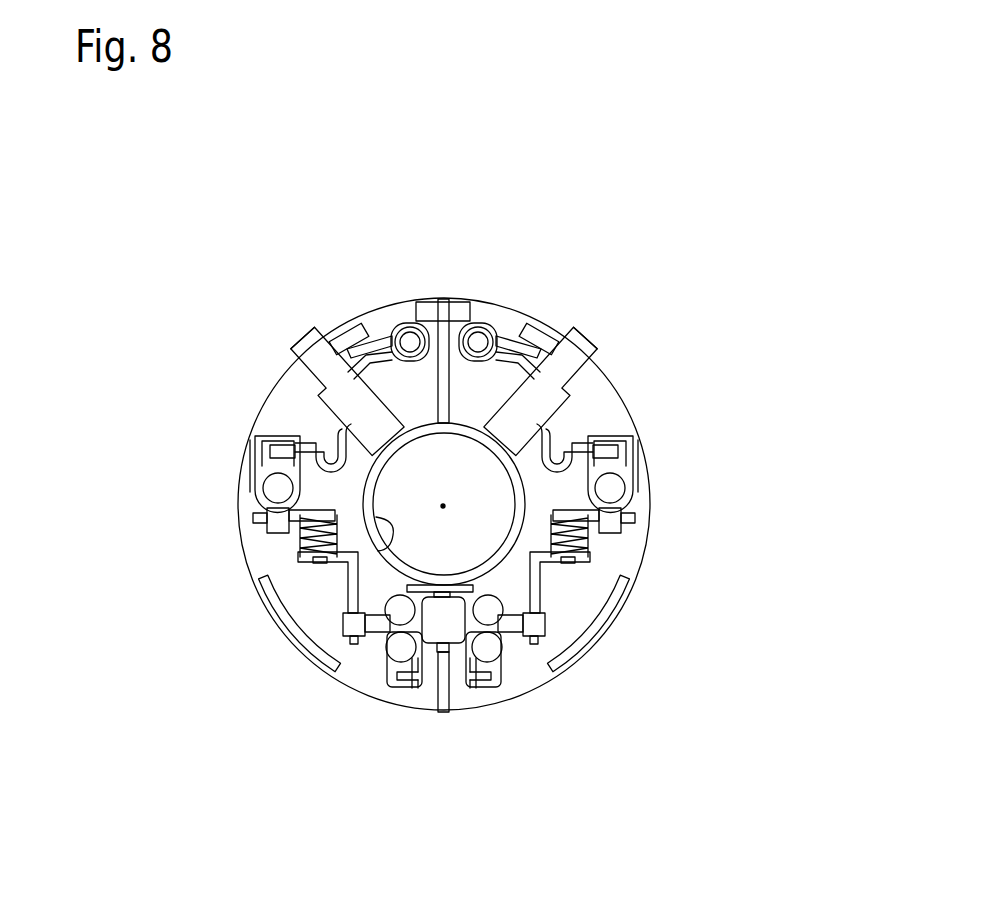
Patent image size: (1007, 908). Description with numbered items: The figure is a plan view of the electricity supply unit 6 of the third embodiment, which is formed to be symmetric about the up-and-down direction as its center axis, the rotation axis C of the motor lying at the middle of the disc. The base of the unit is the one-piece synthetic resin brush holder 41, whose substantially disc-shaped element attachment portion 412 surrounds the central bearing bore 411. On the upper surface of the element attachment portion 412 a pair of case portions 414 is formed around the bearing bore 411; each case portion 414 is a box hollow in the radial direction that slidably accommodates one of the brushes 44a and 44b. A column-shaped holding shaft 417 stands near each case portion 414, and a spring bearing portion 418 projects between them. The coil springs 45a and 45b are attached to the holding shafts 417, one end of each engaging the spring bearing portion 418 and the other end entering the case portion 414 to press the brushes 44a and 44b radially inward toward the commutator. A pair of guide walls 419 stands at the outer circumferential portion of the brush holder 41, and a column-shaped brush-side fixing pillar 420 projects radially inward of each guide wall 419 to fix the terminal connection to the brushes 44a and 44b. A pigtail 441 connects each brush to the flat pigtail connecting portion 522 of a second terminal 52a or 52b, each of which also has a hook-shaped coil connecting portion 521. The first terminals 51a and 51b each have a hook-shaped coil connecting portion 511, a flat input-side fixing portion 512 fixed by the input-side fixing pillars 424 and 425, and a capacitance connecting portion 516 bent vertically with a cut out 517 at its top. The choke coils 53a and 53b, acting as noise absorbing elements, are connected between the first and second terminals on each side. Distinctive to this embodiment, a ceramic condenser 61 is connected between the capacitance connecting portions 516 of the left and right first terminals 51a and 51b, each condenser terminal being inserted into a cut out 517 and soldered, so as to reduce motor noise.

The electricity supply unit 6 is at (546, 202).
The brush holder 41 is at (568, 333).
The bearing bore 411 is at (374, 518).
The element attachment portion 412 is at (464, 650).
The case portion 414 is at (332, 392).
The holding shaft 417 is at (452, 299).
The spring bearing portion 418 is at (346, 326).
The guide wall 419 is at (252, 465).
The brush-side fixing pillar 420 is at (324, 446).
The input-side fixing pillar 424 is at (386, 606).
The input-side fixing pillar 425 is at (424, 640).
The pigtail 441 is at (294, 350).
The brush 44a is at (262, 488).
The brush 44b is at (626, 488).
The coil spring 45a is at (408, 326).
The coil spring 45b is at (480, 326).
The first terminal 51a is at (346, 628).
The first terminal 51b is at (542, 628).
The coil connecting portion 511 is at (364, 624).
The input-side fixing portion 512 is at (390, 672).
The capacitance connecting portion 516 is at (410, 683).
The cut out 517 is at (417, 690).
The coil connecting portion 521 is at (262, 517).
The pigtail connecting portion 522 is at (272, 449).
The second terminal 52a is at (270, 440).
The second terminal 52b is at (620, 440).
The choke coil 53a is at (302, 535).
The choke coil 53b is at (586, 535).
The ceramic condenser 61 is at (392, 652).
The rotation axis C is at (448, 506).